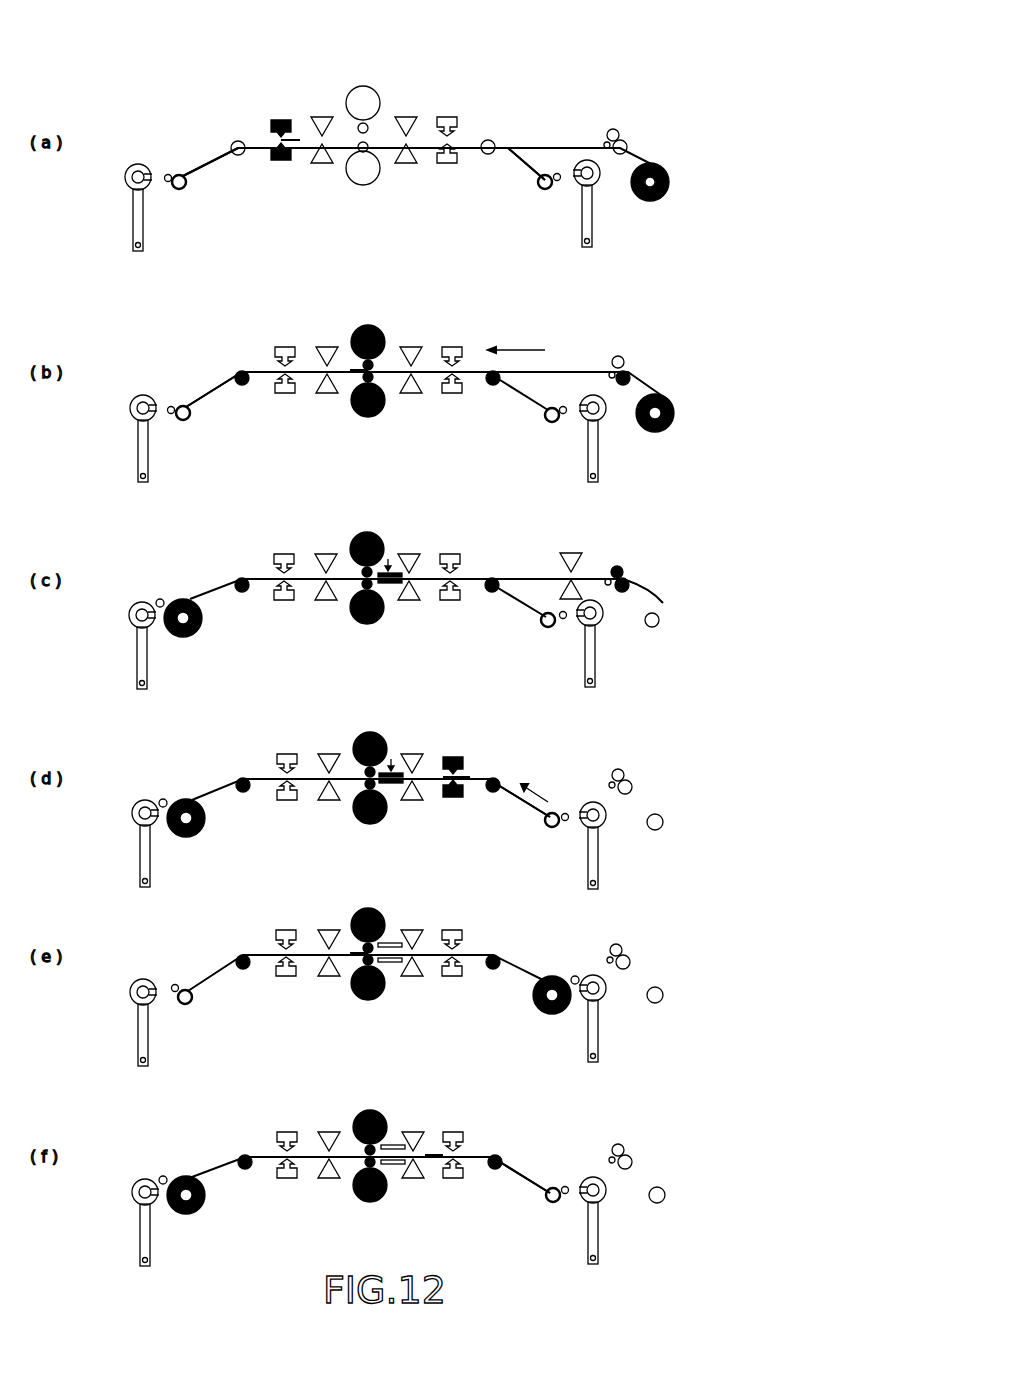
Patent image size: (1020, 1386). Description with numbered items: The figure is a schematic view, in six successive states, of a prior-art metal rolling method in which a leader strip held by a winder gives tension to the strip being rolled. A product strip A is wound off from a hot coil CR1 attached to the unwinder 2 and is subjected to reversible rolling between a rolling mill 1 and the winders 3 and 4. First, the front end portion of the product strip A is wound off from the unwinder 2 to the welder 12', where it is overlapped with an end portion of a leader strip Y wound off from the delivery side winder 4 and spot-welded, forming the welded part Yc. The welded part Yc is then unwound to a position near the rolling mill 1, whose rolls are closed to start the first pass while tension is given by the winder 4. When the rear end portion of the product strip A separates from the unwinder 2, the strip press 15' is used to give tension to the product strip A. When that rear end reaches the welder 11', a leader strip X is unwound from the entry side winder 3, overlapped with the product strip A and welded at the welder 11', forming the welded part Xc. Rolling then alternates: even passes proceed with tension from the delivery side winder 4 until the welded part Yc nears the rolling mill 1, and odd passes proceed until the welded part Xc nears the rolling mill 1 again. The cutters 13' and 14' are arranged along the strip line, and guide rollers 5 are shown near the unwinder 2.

The rolling mill 1 is at (360, 188).
The unwinder 2 is at (652, 195).
The entry side winder 3 is at (545, 190).
The delivery side winder 4 is at (180, 190).
The guide roller set 5 is at (622, 131).
The welder 11' is at (470, 622).
The welder 12' is at (282, 622).
The cutter 13' is at (487, 612).
The cutter 14' is at (325, 622).
The strip press 15' is at (396, 861).
The product strip A is at (640, 150).
The leader strip X is at (508, 160).
The leader strip Y is at (215, 160).
The welded part Xc is at (458, 783).
The welded part Yc is at (288, 145).
The coil CR1 is at (668, 185).